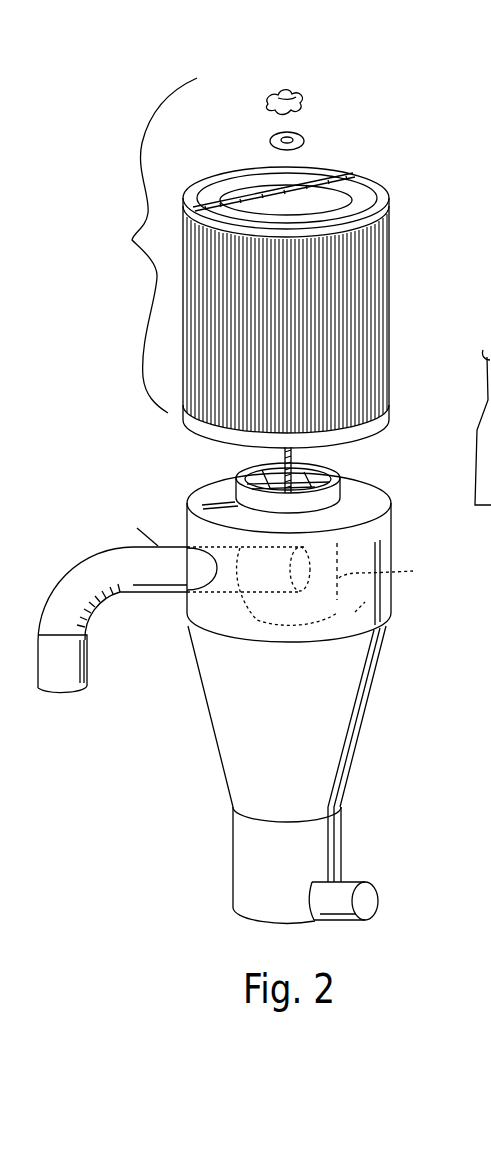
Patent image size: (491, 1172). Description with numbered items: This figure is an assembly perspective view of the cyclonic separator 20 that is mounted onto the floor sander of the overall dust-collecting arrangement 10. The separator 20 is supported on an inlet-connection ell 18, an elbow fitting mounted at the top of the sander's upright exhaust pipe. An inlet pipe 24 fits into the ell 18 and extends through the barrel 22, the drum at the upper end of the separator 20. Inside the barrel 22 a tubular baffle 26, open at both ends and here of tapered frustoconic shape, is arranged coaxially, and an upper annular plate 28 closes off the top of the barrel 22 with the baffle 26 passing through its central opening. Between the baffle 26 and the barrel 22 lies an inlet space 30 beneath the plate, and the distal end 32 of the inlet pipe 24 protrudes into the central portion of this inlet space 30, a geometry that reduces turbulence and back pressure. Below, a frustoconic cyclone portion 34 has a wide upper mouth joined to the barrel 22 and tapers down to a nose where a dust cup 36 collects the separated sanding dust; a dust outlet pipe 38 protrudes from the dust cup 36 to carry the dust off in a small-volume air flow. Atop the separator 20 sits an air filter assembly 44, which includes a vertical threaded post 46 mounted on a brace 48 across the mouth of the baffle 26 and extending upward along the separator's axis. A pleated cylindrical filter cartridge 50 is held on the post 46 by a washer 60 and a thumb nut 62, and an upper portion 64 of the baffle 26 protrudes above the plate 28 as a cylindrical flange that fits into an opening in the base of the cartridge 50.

The vacuum cleaner 10 is at (483, 406).
The inlet-connection ell 18 is at (67, 580).
The cyclonic separator 20 is at (303, 720).
The barrel 22 is at (383, 547).
The inlet pipe 24 is at (157, 573).
The tubular baffle 26 is at (398, 571).
The upper annular plate 28 is at (375, 500).
The inlet space 30 is at (345, 622).
The distal end 32 is at (217, 617).
The frustoconic cyclone portion 34 is at (348, 778).
The dust cup 36 is at (238, 860).
The dust outlet pipe 38 is at (345, 921).
The air filter assembly 44 is at (136, 245).
The vertical threaded post 46 is at (237, 460).
The brace 48 is at (318, 486).
The pleated cylindrical filter cartridge 50 is at (393, 238).
The washer 60 is at (303, 138).
The thumb nut 62 is at (293, 95).
The upper portion of the baffle 64 is at (220, 468).